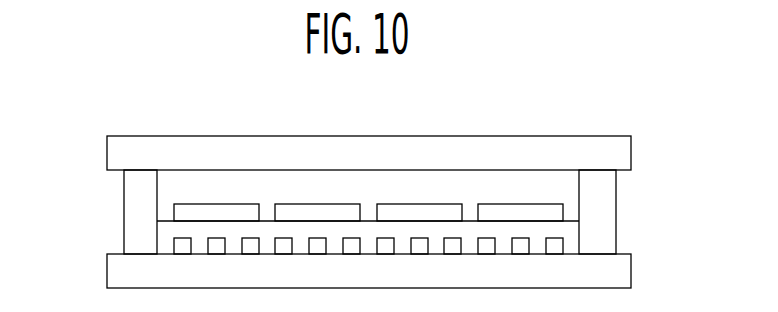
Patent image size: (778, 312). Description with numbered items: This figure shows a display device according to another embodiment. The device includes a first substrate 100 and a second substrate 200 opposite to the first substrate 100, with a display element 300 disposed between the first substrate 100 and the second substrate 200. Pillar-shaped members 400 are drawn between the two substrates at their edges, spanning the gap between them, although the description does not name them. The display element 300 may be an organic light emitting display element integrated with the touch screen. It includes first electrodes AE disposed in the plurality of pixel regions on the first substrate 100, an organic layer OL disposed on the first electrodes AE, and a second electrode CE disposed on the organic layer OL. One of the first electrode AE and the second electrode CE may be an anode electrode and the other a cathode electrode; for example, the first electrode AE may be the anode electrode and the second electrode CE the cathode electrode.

The first substrate 100 is at (123, 277).
The second substrate 200 is at (123, 152).
The display element 300 is at (457, 219).
The sealing member (spacer) 400 is at (137, 221).
The second electrode CE is at (558, 210).
The organic layer OL is at (566, 231).
The first electrode AE is at (555, 247).